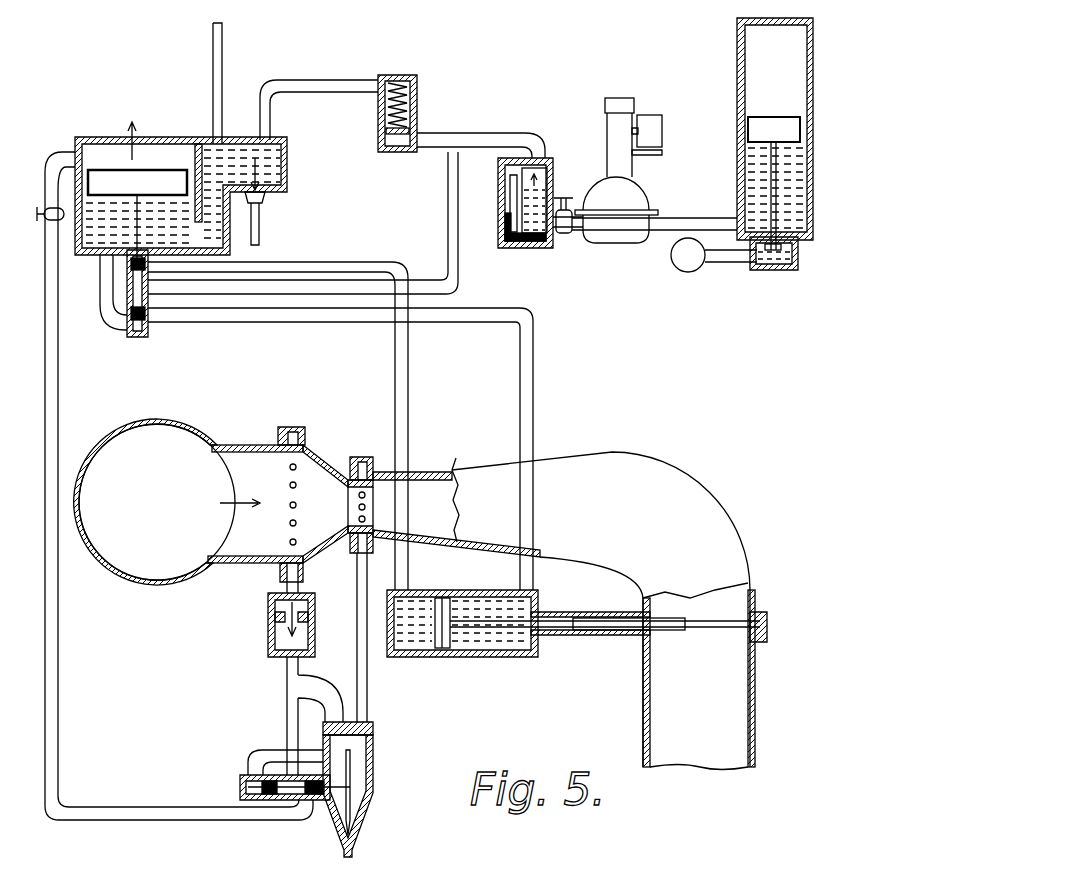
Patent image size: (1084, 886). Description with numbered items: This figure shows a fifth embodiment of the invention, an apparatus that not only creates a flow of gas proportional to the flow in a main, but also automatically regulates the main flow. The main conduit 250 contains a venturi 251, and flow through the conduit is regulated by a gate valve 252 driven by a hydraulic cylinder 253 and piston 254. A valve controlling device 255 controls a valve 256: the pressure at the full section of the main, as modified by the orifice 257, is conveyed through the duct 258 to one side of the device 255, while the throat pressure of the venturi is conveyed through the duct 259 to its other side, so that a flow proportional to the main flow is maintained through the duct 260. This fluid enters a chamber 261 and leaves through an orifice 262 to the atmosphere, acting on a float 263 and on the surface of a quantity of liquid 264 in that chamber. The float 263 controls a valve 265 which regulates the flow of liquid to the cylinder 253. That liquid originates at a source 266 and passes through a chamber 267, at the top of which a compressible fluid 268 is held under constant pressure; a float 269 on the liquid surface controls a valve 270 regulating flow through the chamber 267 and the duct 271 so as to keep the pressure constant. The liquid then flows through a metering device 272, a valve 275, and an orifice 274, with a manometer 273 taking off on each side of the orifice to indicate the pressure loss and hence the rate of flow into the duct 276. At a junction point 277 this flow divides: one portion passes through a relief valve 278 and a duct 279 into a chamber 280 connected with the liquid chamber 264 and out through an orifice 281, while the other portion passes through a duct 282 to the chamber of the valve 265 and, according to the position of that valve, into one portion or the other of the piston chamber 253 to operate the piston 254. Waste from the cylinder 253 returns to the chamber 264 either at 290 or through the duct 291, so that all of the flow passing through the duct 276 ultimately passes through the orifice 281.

The main conduit 250 is at (414, 594).
The venturi 251 is at (337, 462).
The gate valve 252 is at (630, 636).
The hydraulic cylinder 253 is at (490, 657).
The piston 254 is at (437, 650).
The valve controlling device 255 is at (360, 800).
The valve 256 is at (240, 782).
The orifice 257 is at (268, 628).
The duct 258 is at (312, 702).
The duct 259 is at (357, 560).
The duct 260 is at (57, 727).
The chamber 261 is at (181, 196).
The orifice 262 is at (136, 140).
The float 263 is at (137, 183).
The liquid 264 is at (62, 166).
The valve 265 is at (148, 318).
The source 266 is at (690, 266).
The chamber 267 is at (740, 197).
The compressible fluid 268 is at (748, 58).
The float 269 is at (752, 120).
The valve 270 is at (797, 256).
The duct 271 is at (665, 232).
The metering device 272 is at (608, 242).
The manometer 273 is at (545, 160).
The orifice 274 is at (548, 172).
The valve 275 is at (563, 234).
The duct 276 is at (512, 133).
The junction point 277 is at (458, 133).
The relief valve 278 is at (378, 121).
The duct 279 is at (290, 82).
The chamber 280 is at (287, 166).
The orifice 281 is at (265, 199).
The duct 282 is at (447, 205).
The waste passage 290 is at (127, 258).
The duct 291 is at (108, 310).